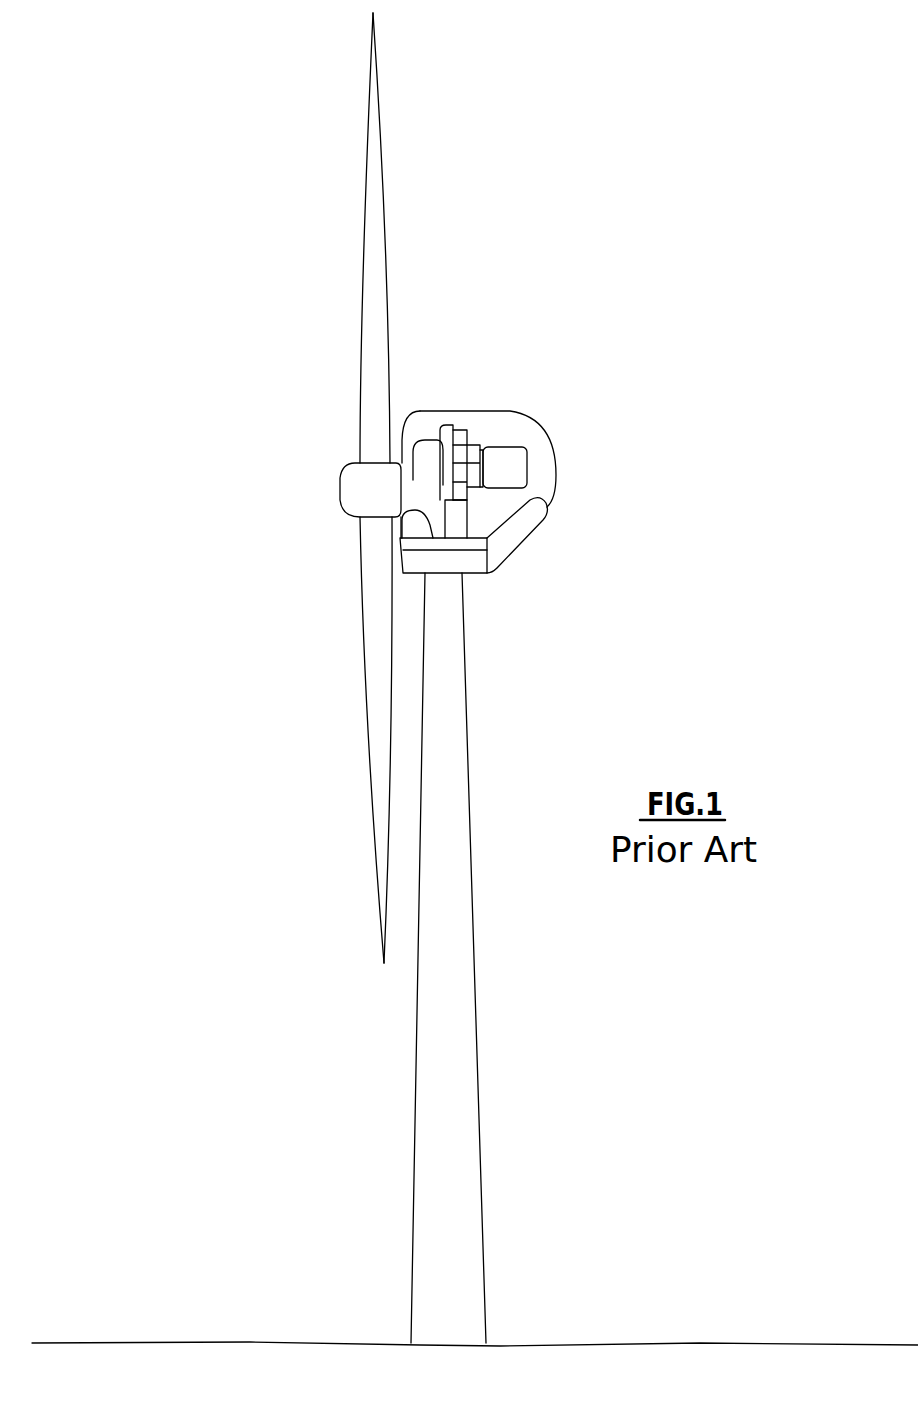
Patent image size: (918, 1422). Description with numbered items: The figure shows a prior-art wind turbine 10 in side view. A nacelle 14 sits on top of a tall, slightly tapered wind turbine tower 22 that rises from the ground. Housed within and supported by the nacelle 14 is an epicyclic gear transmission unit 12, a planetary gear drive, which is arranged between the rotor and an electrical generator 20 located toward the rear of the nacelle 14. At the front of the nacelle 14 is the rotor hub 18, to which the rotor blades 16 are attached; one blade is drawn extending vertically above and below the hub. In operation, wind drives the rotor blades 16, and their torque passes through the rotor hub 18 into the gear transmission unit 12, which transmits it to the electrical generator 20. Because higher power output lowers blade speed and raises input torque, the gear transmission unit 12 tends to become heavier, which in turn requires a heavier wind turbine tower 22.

The wind turbine 10 is at (141, 181).
The epicyclic gear transmission unit 12 is at (427, 438).
The nacelle 14 is at (556, 477).
The rotor blades 16 is at (382, 190).
The rotor hub 18 is at (370, 490).
The electrical generator 20 is at (502, 467).
The wind turbine tower 22 is at (477, 1045).